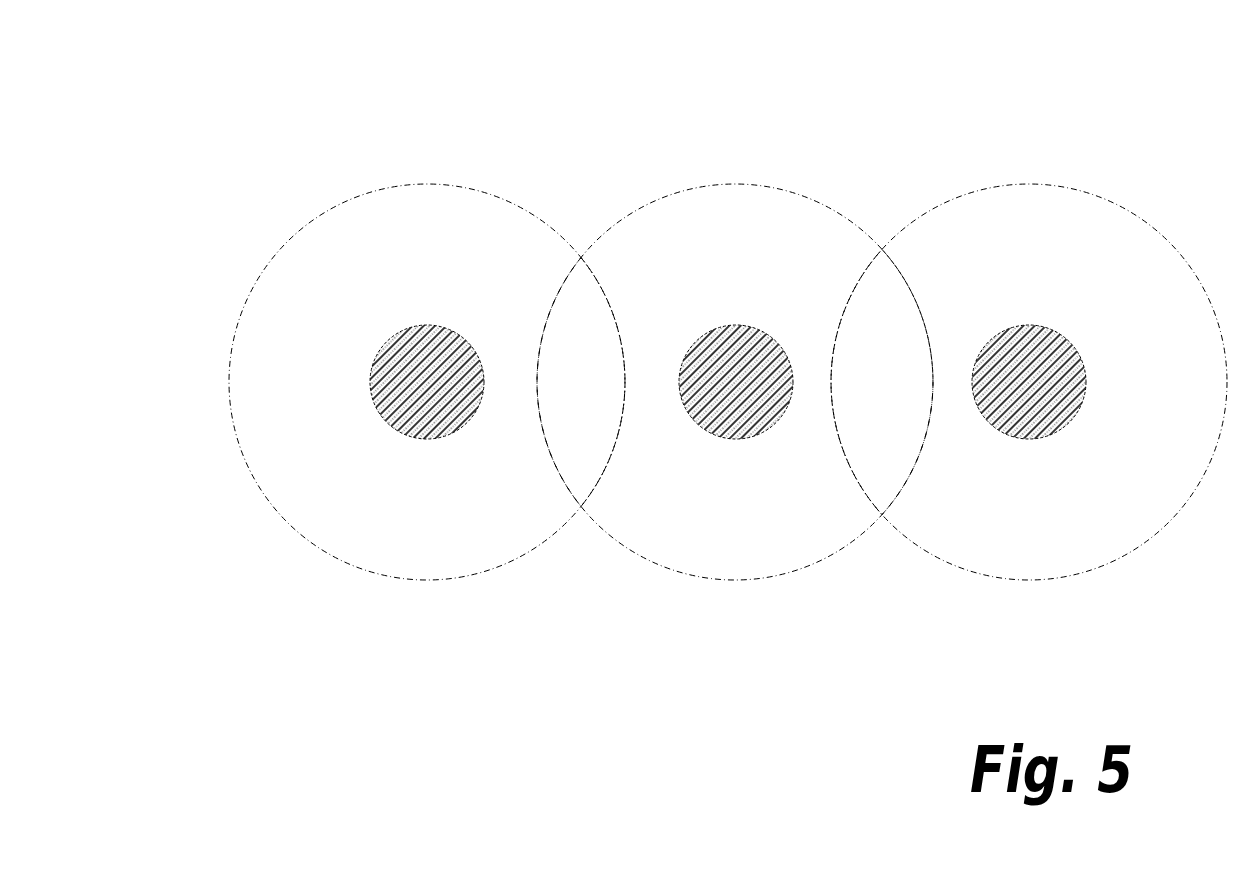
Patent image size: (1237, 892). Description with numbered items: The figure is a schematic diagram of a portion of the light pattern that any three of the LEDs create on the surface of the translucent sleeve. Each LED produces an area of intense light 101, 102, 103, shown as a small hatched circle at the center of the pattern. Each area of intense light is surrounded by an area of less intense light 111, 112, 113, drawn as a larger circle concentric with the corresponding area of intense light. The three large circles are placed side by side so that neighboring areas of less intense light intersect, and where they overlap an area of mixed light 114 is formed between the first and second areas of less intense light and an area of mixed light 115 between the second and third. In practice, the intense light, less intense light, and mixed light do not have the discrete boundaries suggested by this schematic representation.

The area of intense light 101 is at (427, 382).
The area of intense light 102 is at (736, 382).
The area of intense light 103 is at (1029, 382).
The area of less intense light 111 is at (370, 513).
The area of less intense light 112 is at (727, 513).
The area of less intense light 113 is at (1027, 504).
The area of mixed light 114 is at (577, 400).
The area of mixed light 115 is at (869, 428).